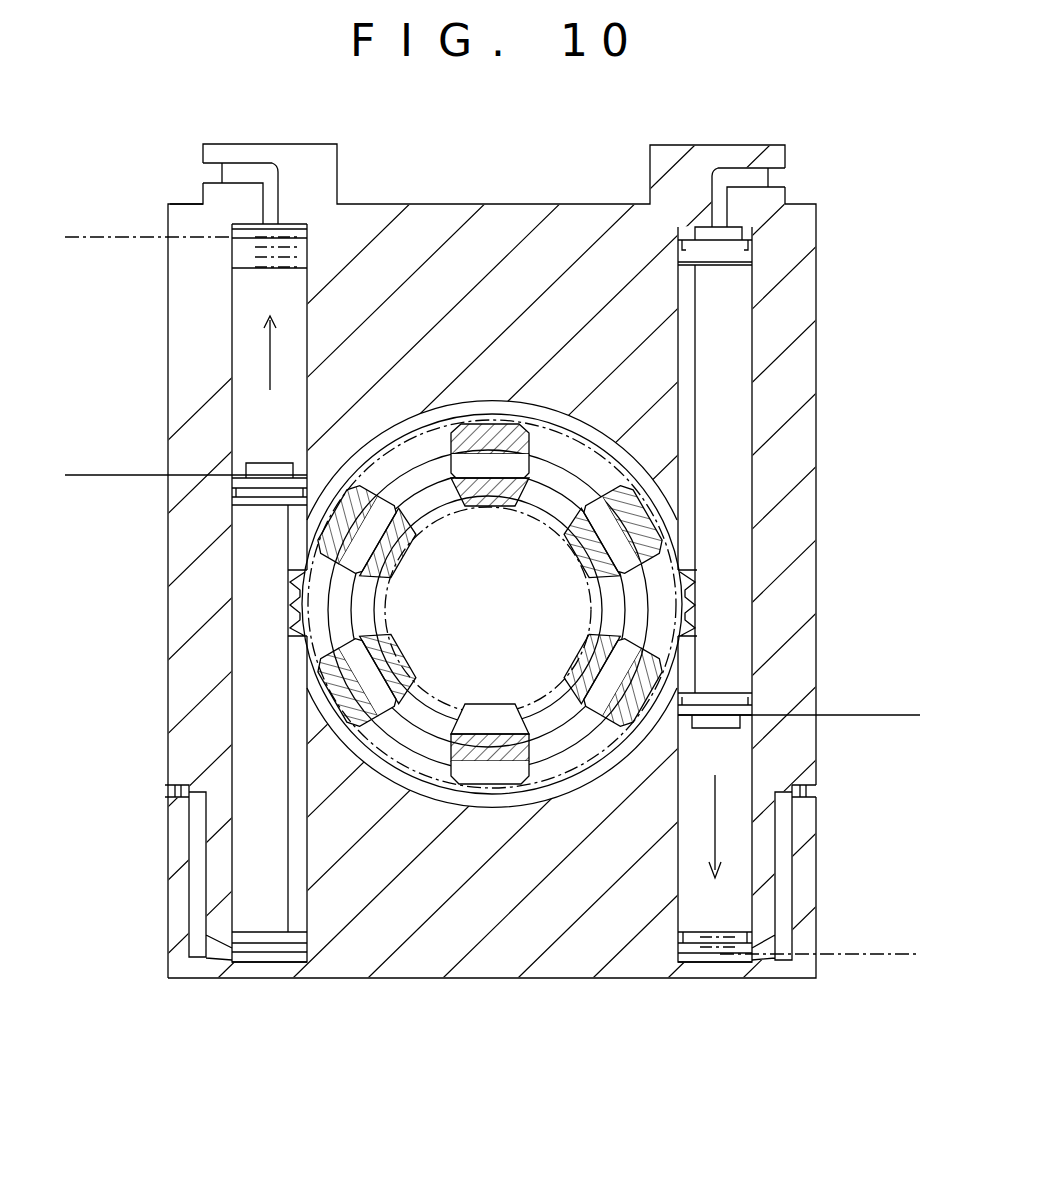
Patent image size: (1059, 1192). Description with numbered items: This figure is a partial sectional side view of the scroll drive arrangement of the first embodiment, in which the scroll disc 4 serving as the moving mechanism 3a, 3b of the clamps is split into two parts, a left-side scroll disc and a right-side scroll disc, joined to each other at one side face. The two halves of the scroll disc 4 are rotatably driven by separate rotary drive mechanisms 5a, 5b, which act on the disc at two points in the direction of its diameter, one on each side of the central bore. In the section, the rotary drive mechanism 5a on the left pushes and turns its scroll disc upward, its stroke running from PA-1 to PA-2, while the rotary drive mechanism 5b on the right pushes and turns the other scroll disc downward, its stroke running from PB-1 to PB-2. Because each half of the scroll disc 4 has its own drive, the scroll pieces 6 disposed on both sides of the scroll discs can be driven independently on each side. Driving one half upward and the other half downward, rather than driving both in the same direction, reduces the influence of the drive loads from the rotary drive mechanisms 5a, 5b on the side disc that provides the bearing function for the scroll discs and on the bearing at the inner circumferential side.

The upper end position of rotary drive mechanism 5a PA-2 is at (85, 237).
The start position of rotary drive mechanism 5a PA-1 is at (83, 475).
The start position of rotary drive mechanism 5b PB-1 is at (879, 715).
The lower end position of rotary drive mechanism 5b PB-2 is at (879, 954).
The scroll pieces 6 is at (467, 437).
The scroll disc 4 is at (565, 450).
The moving mechanism 3a is at (228, 690).
The moving mechanism 3b is at (772, 544).
The rotary drive mechanism 5a is at (258, 753).
The rotary drive mechanism 5b is at (730, 522).